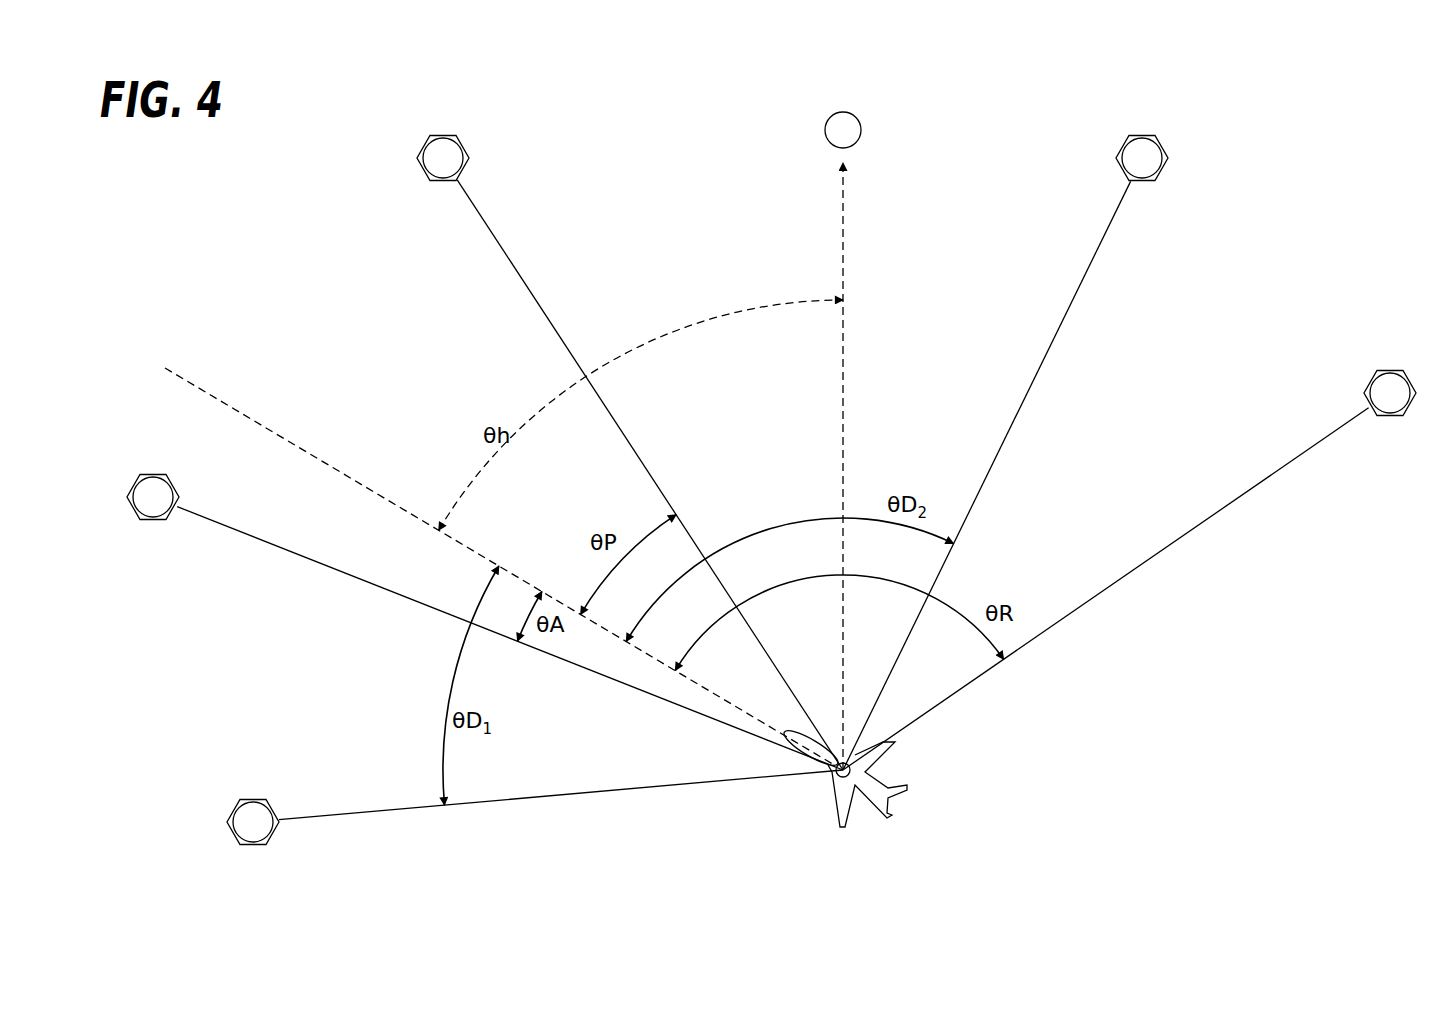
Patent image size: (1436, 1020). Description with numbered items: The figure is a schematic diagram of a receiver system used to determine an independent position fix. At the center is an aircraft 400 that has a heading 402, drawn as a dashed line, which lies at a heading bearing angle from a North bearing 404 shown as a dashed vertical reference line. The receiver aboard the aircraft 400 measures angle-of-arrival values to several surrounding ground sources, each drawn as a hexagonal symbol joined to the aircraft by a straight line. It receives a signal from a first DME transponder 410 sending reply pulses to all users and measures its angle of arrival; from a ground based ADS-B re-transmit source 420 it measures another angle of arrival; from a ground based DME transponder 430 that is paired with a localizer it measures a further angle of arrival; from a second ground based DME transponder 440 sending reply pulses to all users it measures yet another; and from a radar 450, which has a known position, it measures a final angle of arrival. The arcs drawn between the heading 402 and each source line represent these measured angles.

The aircraft 400 is at (840, 793).
The heading 402 is at (288, 441).
The North bearing 404 is at (842, 207).
The first DME transponder D1 410 is at (228, 832).
The ground based ADS-B re-transmit source A 420 is at (154, 520).
The ground based DME transponder P 430 is at (417, 160).
The second ground based DME transponder D2 440 is at (1116, 156).
The radar R 450 is at (1364, 386).